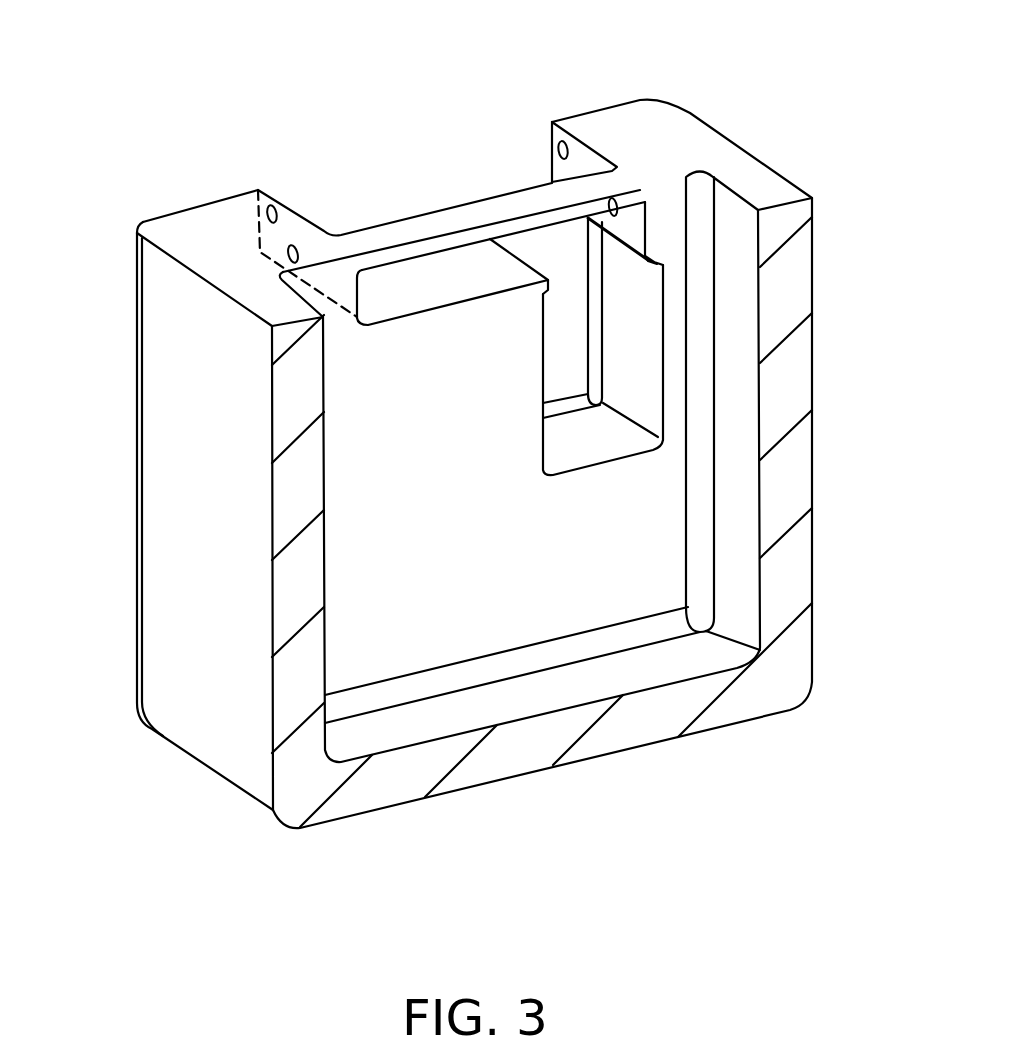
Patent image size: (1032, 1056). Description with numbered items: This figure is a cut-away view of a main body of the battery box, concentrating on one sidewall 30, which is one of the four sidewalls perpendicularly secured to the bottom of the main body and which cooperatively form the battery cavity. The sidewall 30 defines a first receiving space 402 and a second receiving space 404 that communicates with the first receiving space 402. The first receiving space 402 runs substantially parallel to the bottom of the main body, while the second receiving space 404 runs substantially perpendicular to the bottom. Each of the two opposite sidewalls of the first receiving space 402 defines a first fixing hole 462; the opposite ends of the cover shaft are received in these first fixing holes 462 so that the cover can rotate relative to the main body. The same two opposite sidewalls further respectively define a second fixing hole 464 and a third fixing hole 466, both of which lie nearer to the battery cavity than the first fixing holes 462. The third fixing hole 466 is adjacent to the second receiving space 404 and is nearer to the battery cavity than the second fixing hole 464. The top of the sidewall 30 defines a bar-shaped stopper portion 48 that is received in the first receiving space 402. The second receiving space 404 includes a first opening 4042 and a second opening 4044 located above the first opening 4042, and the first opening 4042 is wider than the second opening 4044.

The sidewall 30 is at (232, 255).
The bar-shaped stopper portion 48 is at (413, 230).
The first receiving space 402 is at (467, 276).
The second receiving space 404 is at (625, 378).
The first opening 4042 is at (660, 273).
The second opening 4044 is at (660, 263).
The first fixing hole 462 is at (274, 205).
The second fixing hole 464 is at (293, 245).
The third fixing hole 466 is at (616, 200).